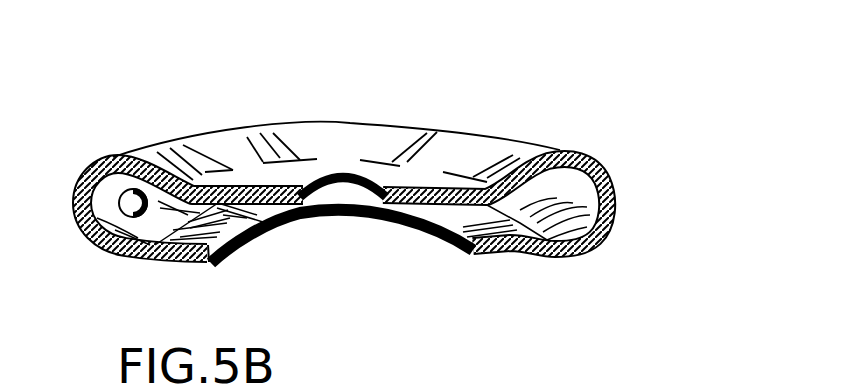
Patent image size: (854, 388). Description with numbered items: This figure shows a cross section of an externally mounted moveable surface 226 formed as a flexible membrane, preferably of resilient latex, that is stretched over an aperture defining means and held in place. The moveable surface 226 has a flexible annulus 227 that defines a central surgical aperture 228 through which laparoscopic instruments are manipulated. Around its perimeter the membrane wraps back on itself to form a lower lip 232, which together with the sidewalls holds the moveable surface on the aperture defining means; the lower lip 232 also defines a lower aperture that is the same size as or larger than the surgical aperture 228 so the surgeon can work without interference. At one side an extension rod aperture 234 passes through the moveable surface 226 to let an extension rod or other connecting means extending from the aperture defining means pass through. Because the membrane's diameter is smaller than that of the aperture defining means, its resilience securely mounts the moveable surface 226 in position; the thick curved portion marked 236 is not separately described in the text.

The moveable surface 226 is at (585, 145).
The flexible annulus 227 is at (480, 155).
The surgical aperture 228 is at (350, 173).
The lower lip 232 is at (573, 252).
The extension rod aperture 234 is at (133, 203).
The stiffener arc 236 is at (338, 218).